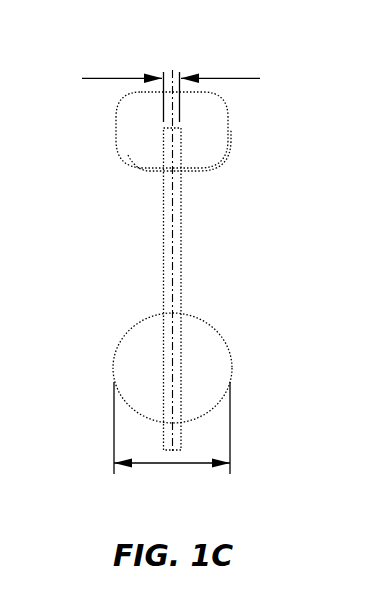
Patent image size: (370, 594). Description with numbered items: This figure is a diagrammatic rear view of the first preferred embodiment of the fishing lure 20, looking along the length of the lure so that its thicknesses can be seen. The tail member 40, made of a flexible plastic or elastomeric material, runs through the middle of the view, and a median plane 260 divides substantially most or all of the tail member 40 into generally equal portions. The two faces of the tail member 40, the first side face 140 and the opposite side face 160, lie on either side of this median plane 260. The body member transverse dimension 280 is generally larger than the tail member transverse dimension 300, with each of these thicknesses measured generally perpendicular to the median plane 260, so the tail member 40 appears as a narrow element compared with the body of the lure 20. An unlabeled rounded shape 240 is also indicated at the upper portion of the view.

The fishing lure 20 is at (99, 206).
The tail member 40 is at (177, 251).
The first side face 140 is at (157, 250).
The opposite side face 160 is at (188, 236).
The proximal body portion 240 is at (125, 143).
The median plane 260 is at (173, 283).
The body member transverse dimension 280 is at (148, 463).
The tail member transverse dimension 300 is at (175, 73).